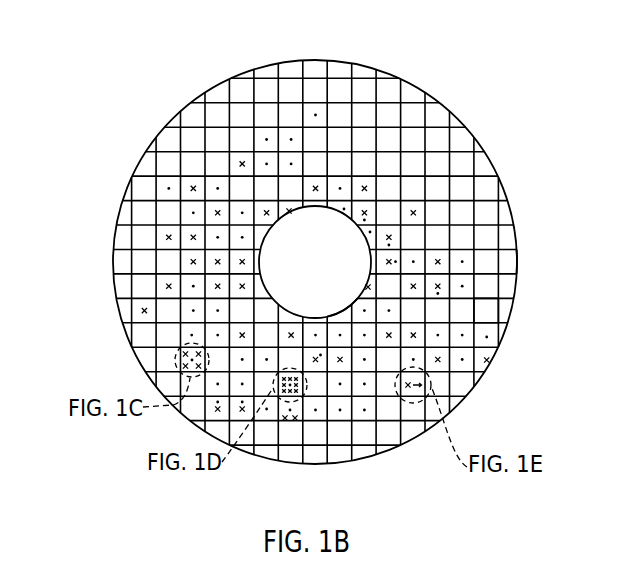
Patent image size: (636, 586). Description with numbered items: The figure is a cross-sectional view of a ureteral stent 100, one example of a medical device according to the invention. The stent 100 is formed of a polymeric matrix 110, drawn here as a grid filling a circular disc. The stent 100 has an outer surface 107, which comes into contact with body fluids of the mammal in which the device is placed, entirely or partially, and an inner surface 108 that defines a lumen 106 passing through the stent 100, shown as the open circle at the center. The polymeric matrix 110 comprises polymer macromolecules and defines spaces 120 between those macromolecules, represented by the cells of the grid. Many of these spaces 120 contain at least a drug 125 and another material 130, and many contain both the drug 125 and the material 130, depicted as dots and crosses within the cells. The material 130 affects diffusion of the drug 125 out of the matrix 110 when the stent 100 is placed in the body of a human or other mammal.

The ureteral stent 100 is at (441, 104).
The lumen 106 is at (331, 244).
The outer surface 107 is at (517, 263).
The inner surface 108 is at (340, 309).
The polymeric matrix 110 is at (498, 290).
The spaces 120 is at (490, 313).
The drug 125 is at (489, 337).
The material 130 is at (490, 361).